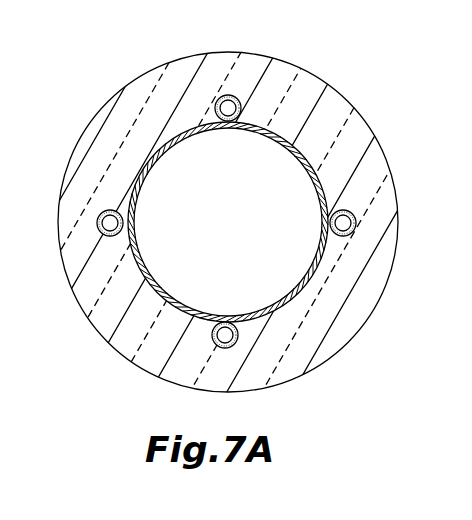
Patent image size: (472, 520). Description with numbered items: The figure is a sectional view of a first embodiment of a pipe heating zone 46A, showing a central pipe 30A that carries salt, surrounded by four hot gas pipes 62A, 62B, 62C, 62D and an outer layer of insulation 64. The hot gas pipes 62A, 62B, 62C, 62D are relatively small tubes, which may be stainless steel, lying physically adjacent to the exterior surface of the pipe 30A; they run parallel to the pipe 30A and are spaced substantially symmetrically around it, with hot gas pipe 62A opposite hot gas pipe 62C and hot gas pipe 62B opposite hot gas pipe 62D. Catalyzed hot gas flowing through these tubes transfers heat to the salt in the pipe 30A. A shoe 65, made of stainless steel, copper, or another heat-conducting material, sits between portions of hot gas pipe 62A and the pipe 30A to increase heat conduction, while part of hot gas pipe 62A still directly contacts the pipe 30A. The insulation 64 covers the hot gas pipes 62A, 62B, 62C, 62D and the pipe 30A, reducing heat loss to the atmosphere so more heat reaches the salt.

The pipe heating zone 46A is at (115, 79).
The insulation 64 is at (312, 92).
The shoe 65 is at (212, 118).
The pipe 30A is at (158, 150).
The hot gas pipe 62A is at (232, 95).
The hot gas pipe 62B is at (340, 236).
The hot gas pipe 62C is at (212, 338).
The hot gas pipe 62D is at (107, 236).